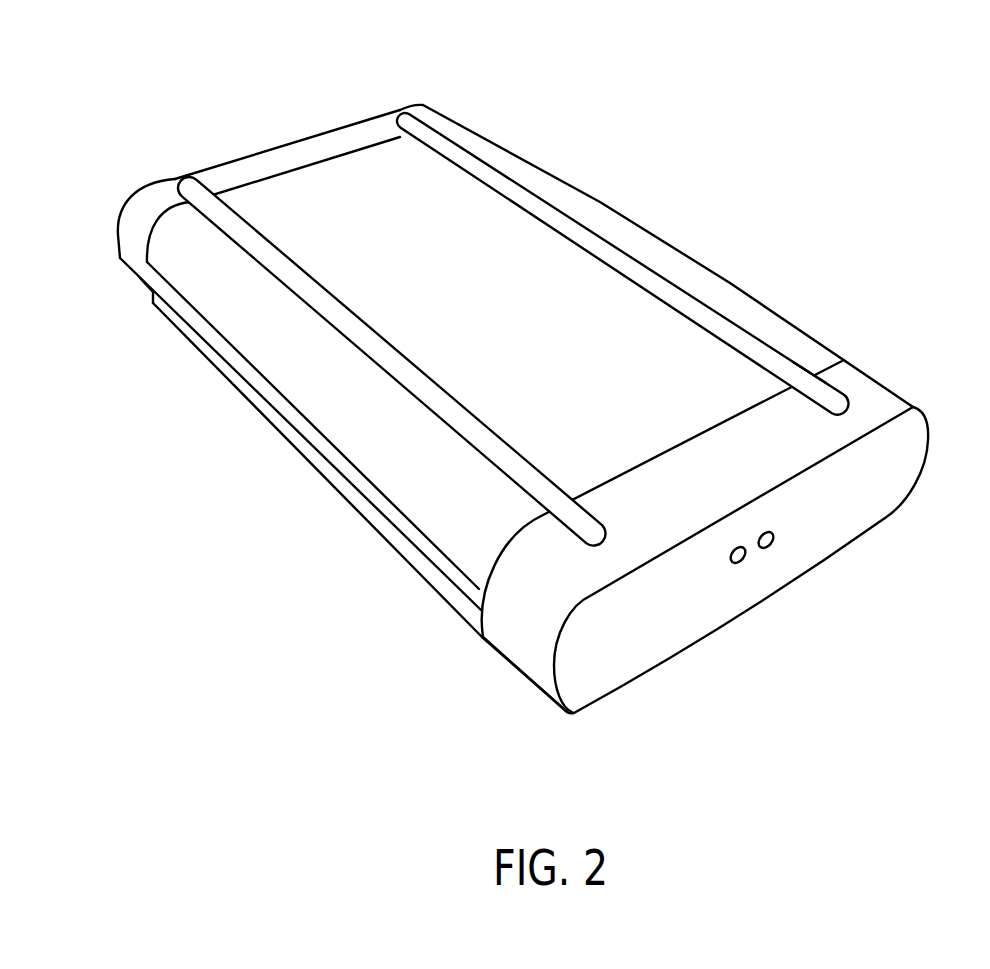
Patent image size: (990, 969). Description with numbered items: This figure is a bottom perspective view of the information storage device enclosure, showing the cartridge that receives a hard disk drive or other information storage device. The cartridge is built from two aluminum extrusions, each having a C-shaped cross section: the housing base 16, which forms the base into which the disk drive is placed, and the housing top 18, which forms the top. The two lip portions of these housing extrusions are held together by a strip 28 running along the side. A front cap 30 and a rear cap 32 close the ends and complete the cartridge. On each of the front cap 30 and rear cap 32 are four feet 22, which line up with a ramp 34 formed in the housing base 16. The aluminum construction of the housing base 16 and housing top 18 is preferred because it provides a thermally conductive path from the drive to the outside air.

The housing base 16 is at (668, 250).
The housing top 18 is at (405, 558).
The feet 22 is at (407, 123).
The strip 28 is at (360, 476).
The front cap 30 is at (777, 584).
The rear cap 32 is at (350, 124).
The ramp 34 is at (793, 362).